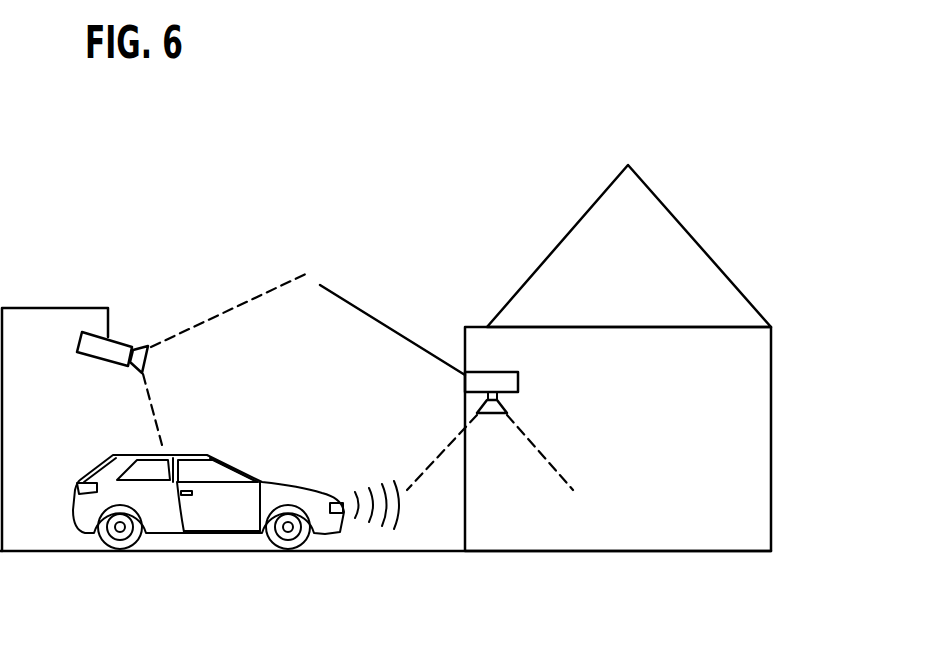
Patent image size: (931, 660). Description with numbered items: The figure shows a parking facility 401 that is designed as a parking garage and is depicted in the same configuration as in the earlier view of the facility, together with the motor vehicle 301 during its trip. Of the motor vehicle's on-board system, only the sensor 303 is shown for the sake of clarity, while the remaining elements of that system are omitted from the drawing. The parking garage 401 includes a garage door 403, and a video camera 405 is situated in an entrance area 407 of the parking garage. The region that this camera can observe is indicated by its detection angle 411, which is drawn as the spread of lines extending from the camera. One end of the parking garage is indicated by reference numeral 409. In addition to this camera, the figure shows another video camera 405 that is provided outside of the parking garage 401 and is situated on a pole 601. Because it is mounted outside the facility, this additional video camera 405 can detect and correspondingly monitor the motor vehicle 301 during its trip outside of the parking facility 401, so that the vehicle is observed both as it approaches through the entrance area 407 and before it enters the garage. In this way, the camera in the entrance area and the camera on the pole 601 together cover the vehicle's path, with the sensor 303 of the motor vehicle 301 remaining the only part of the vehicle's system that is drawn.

The motor vehicle 301 is at (203, 454).
The sensor 303 is at (345, 504).
The parking facility 401 is at (748, 203).
The garage door 403 is at (375, 315).
The video camera 405 is at (119, 335).
The entrance area 407 is at (465, 540).
The end of the parking garage 409 is at (770, 398).
The detection angle 411 is at (240, 335).
The pole 601 is at (49, 308).